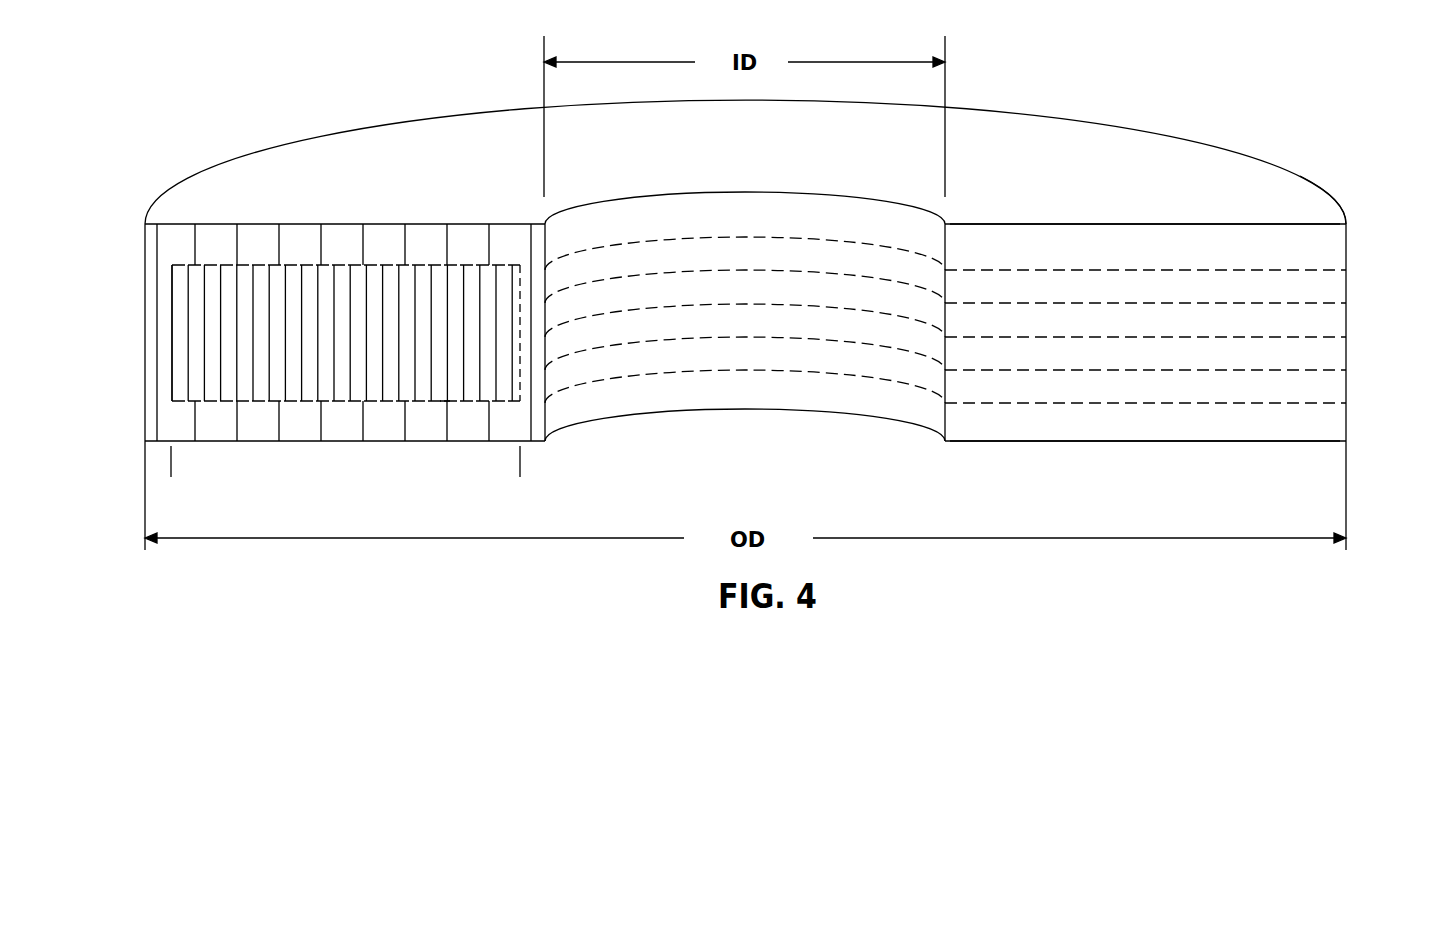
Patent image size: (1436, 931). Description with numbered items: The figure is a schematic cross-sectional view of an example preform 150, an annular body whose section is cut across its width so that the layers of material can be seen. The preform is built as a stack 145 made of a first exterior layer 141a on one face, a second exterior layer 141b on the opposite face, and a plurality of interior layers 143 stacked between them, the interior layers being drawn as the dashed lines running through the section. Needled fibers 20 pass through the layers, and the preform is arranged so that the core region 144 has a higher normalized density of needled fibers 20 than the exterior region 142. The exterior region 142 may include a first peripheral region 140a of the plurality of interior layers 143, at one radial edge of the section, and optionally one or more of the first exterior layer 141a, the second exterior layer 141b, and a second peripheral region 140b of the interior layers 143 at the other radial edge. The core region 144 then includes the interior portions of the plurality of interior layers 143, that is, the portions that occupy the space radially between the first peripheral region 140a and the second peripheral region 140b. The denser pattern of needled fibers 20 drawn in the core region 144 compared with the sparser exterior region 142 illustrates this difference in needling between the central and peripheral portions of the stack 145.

The preform 150 is at (243, 126).
The exterior region 142 is at (330, 240).
The core region 144 is at (454, 254).
The plurality of interior layers 143 is at (1355, 270).
The first exterior layer 141a is at (1105, 423).
The second exterior layer 141b is at (1108, 244).
The stack 145 is at (1308, 176).
The needled fibers 20 is at (190, 338).
The first peripheral region 140a is at (207, 462).
The second peripheral region 140b is at (582, 462).